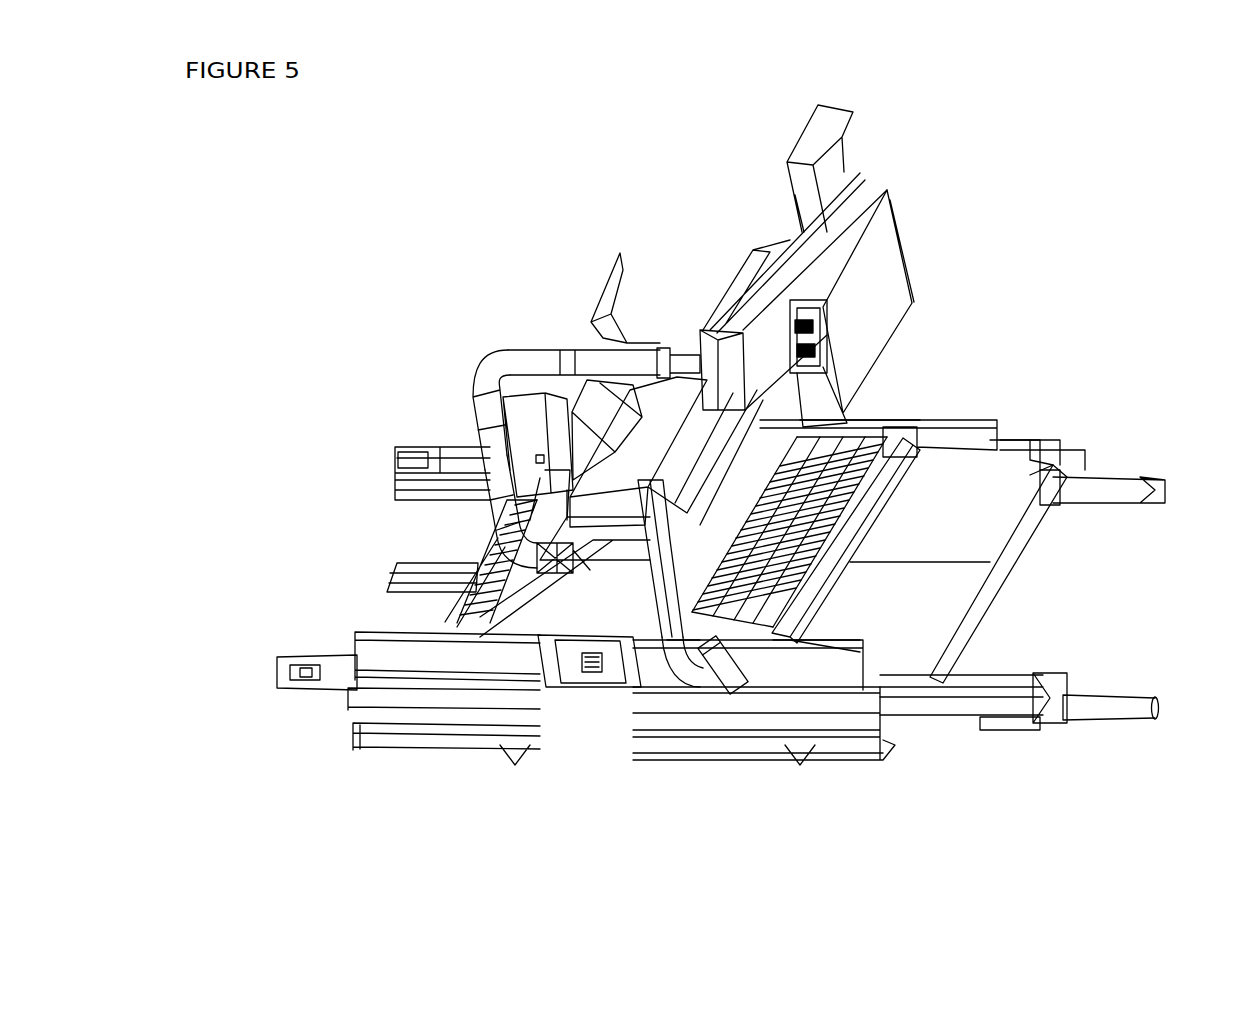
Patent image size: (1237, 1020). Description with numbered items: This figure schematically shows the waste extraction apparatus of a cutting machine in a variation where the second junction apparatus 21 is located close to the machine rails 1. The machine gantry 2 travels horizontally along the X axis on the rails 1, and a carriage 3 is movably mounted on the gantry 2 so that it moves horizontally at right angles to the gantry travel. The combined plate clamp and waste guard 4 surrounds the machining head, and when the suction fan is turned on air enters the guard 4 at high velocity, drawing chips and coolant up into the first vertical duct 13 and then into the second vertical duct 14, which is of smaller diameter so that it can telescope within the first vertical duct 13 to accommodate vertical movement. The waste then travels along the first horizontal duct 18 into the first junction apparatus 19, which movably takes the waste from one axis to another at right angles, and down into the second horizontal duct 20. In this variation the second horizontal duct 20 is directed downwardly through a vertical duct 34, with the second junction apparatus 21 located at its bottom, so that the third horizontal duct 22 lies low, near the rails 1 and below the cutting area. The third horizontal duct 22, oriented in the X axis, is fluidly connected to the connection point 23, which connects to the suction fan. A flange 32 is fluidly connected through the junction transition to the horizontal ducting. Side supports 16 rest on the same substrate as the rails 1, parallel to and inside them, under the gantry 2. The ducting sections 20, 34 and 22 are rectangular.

The cutting machine rails 1 is at (783, 747).
The machine gantry 2 is at (585, 602).
The carriage 3 is at (643, 467).
The combined plate clamp and waste guard 4 is at (565, 565).
The first vertical duct 13 is at (508, 516).
The second vertical duct 14 is at (488, 442).
The side supports 16 is at (333, 660).
The first horizontal duct 18 is at (600, 360).
The first junction apparatus 19 is at (825, 308).
The second horizontal duct 20 is at (885, 192).
The second junction apparatus 21 is at (713, 670).
The third horizontal duct 22 is at (953, 702).
The connection point 23 is at (1157, 718).
The flange 32 is at (738, 668).
The vertical duct 34 is at (660, 565).